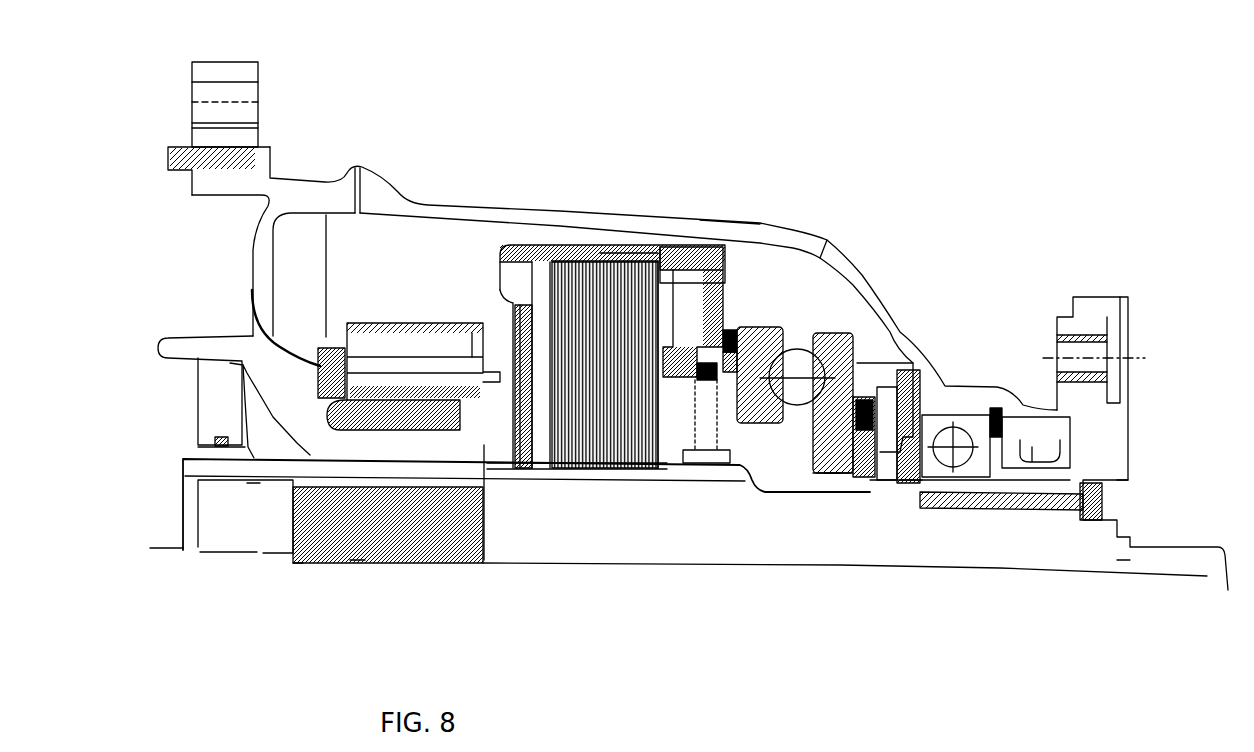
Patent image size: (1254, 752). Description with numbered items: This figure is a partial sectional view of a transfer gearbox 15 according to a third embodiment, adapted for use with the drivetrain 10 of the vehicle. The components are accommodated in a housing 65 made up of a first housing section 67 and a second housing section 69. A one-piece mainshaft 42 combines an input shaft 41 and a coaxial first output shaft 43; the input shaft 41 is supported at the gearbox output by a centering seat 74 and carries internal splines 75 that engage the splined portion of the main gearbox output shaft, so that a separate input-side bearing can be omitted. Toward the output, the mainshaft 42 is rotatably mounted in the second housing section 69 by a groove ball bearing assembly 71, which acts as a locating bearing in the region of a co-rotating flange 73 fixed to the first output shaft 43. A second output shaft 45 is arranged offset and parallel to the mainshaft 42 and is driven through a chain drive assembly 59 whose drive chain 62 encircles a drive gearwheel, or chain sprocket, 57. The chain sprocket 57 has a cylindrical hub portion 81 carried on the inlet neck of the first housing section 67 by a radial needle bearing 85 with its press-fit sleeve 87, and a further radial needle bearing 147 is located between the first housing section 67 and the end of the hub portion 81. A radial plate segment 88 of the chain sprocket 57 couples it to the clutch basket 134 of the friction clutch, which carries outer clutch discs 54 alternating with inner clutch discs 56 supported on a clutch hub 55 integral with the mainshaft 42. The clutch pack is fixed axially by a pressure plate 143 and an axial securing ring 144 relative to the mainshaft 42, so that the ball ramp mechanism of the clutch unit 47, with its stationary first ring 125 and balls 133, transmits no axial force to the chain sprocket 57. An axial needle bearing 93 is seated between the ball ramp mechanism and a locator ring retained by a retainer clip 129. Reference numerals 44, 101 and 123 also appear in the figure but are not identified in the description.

The transfer gearbox 15 is at (531, 106).
The first housing section 67 is at (330, 190).
The drivetrain 10 is at (196, 384).
The hub portion 81 is at (335, 325).
The radial needle bearing 147 is at (297, 345).
The drive chain 62 is at (398, 330).
The chain drive assembly 59 is at (362, 290).
The drive gearwheel 57 is at (413, 367).
The radial plate segment 88 is at (486, 477).
The radial needle bearing 85 is at (388, 563).
The inner clutch discs 56 is at (632, 477).
The clutch hub 55 is at (665, 477).
The axial securing ring 144 is at (520, 477).
The clutch basket 134 is at (505, 270).
The pressure plate 143 is at (590, 258).
The stator top 44 is at (605, 262).
The outer clutch discs 54 is at (675, 262).
The housing 65 is at (730, 213).
The balls 133 is at (797, 423).
The clutch unit 47 is at (742, 320).
The bearing race 101 is at (770, 330).
The second output shaft 45 is at (857, 327).
The second housing section 69 is at (826, 238).
The groove ball bearing assembly 71 is at (937, 420).
The co-rotating flange 73 is at (1093, 307).
The mainshaft 42 is at (713, 547).
The input shaft 41 is at (180, 493).
The centering seat 74 is at (247, 481).
The sleeve 87 is at (307, 563).
The internal splines 75 is at (357, 560).
The stationary first ring 125 is at (798, 462).
The axial needle bearing 93 is at (850, 462).
The retaining ring 123 is at (887, 480).
The retainer clip 129 is at (903, 474).
The first output shaft 43 is at (1123, 567).